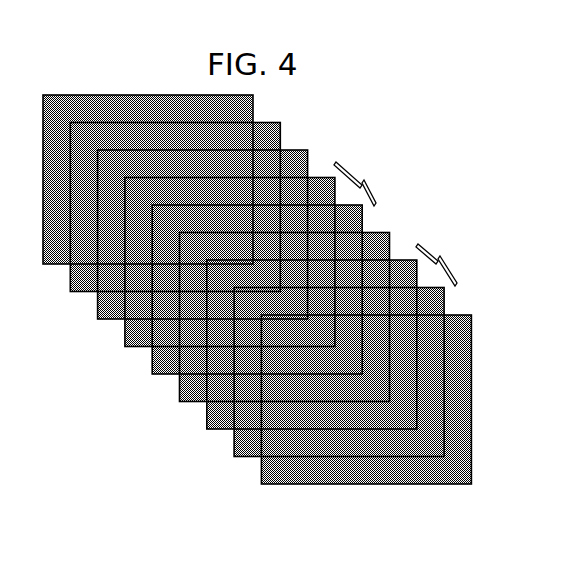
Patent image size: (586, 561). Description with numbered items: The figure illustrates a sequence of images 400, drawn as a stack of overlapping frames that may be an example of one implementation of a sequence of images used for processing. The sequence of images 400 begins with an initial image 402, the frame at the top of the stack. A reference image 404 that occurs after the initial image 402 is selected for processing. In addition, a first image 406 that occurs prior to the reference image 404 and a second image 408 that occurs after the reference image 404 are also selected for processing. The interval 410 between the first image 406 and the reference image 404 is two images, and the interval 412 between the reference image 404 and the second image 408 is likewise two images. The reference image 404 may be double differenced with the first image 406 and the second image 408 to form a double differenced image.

The sequence of images 400 is at (291, 242).
The initial image 402 is at (135, 94).
The reference image 404 is at (378, 233).
The first image 406 is at (293, 150).
The second image 408 is at (472, 407).
The interval 410 is at (366, 179).
The interval 412 is at (447, 259).